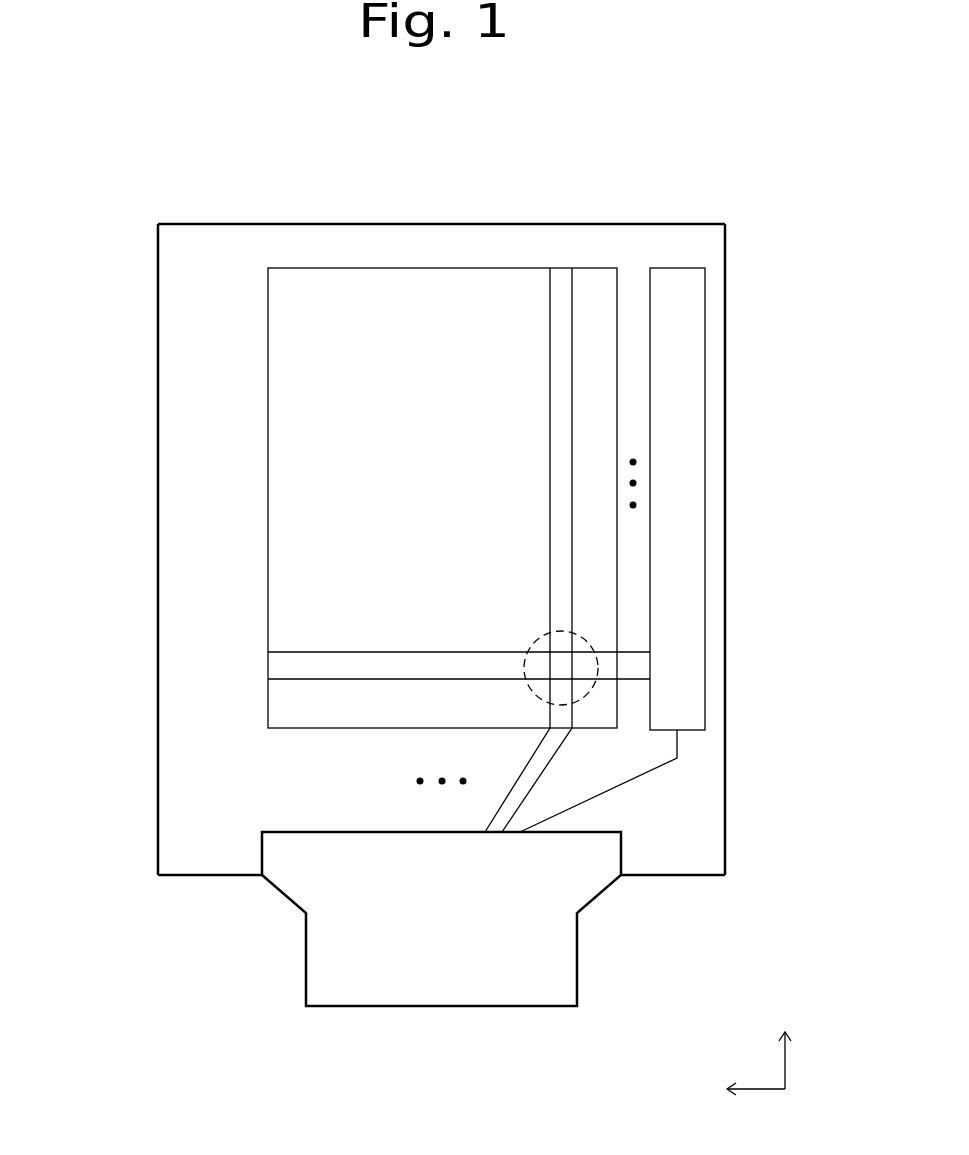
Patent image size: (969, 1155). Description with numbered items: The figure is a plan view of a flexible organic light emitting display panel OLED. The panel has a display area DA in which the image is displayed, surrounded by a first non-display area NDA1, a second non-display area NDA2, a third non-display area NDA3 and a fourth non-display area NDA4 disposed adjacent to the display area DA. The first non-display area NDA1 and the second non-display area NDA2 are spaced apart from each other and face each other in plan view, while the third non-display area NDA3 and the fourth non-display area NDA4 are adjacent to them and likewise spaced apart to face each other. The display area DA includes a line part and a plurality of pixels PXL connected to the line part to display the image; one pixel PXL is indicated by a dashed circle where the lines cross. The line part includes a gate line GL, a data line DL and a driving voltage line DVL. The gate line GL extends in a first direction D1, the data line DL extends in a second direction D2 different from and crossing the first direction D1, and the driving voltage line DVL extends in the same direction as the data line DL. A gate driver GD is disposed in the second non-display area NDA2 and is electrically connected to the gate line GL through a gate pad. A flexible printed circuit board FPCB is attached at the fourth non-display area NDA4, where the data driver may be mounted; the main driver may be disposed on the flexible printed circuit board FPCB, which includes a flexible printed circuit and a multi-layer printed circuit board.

The organic light emitting display OLED is at (446, 551).
The display area DA is at (287, 371).
The first non-display area NDA1 is at (167, 548).
The second non-display area NDA2 is at (715, 513).
The third non-display area NDA3 is at (440, 245).
The fourth non-display area NDA4 is at (315, 800).
The driving voltage line DVL is at (572, 422).
The data line DL is at (550, 497).
The gate line GL is at (357, 652).
The pixel PXL is at (537, 642).
The gate driver GD is at (693, 420).
The flexible printed circuit board FPCB is at (566, 964).
The first direction D1 is at (741, 1089).
The second direction D2 is at (785, 1047).